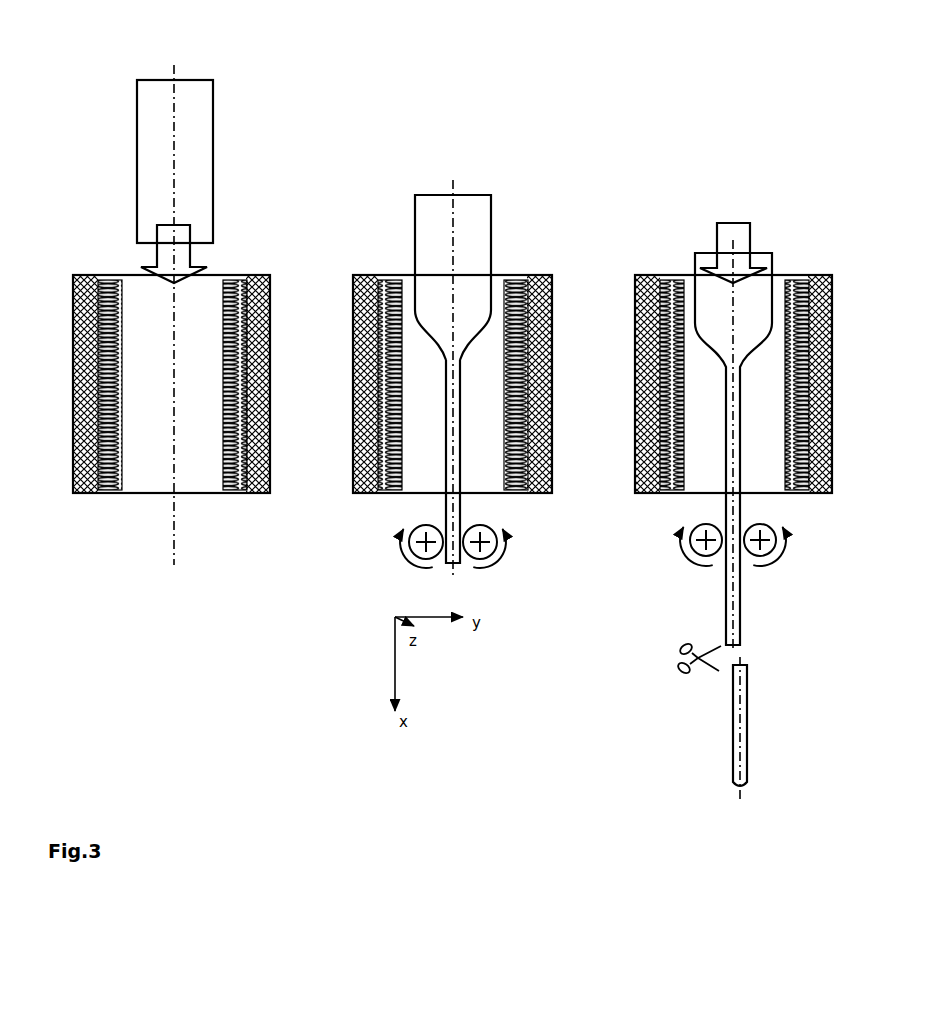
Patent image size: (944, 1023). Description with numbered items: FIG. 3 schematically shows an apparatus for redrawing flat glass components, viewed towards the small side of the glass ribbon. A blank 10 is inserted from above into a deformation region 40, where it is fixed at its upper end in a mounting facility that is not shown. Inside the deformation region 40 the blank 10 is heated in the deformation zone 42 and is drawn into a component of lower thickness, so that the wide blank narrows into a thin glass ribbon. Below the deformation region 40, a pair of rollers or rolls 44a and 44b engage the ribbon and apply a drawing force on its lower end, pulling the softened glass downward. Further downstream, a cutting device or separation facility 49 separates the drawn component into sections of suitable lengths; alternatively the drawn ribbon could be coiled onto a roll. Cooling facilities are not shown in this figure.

The blank 10 is at (158, 102).
The deformation region 40 is at (136, 294).
The deformation zone 42 is at (465, 318).
The roller 44a is at (692, 553).
The roller 44b is at (764, 553).
The separation facility 49 is at (676, 663).